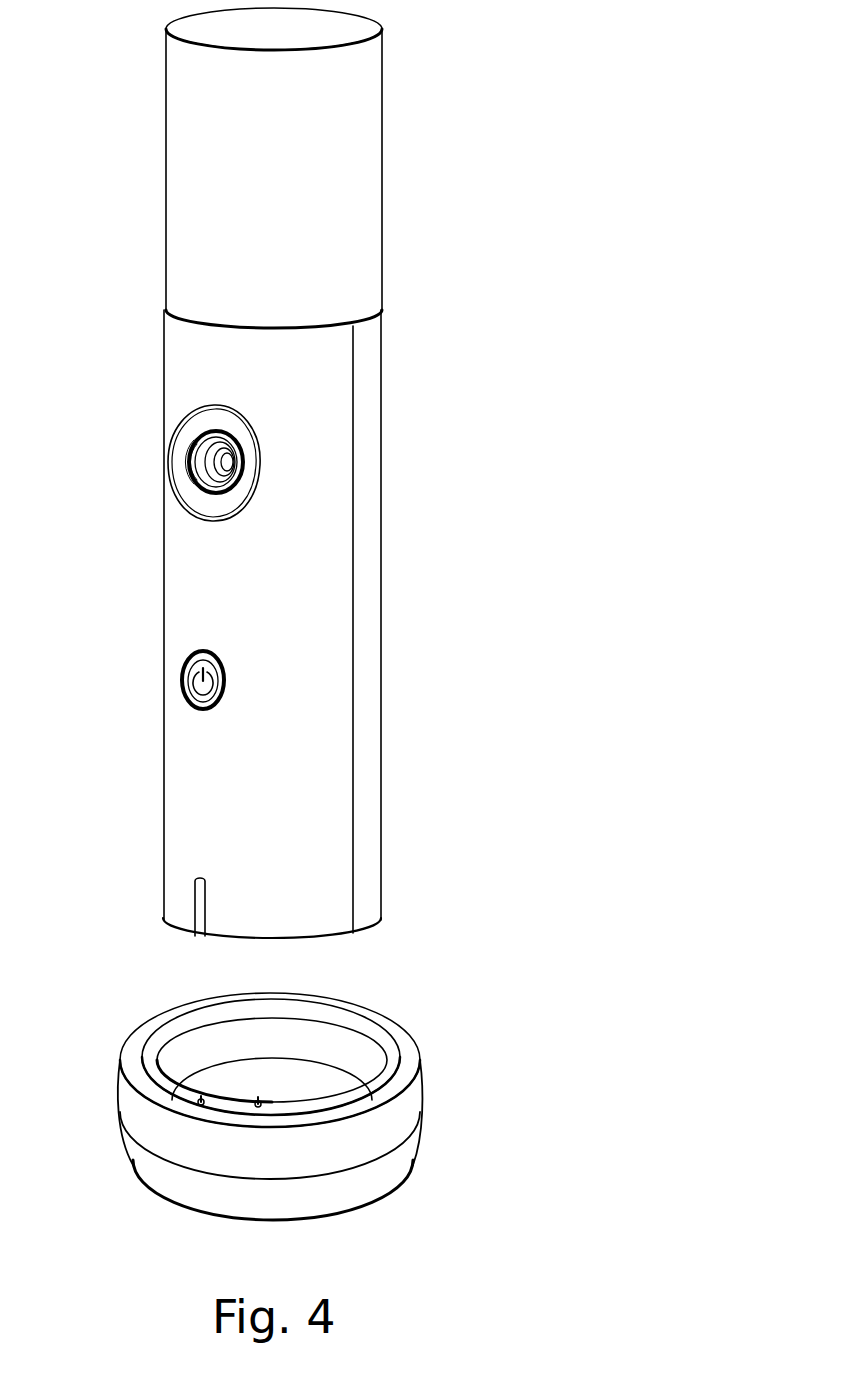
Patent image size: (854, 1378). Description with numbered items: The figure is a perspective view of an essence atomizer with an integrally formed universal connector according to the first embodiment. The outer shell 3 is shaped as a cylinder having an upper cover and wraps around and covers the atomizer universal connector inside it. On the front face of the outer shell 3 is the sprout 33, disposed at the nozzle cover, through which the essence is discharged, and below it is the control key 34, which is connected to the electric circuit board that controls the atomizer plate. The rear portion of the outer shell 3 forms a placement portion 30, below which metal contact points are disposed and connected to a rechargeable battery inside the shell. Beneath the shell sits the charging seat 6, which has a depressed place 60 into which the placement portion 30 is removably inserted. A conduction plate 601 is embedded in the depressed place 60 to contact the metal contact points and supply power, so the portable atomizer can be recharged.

The outer shell 3 is at (320, 630).
The placement portion 30 is at (295, 940).
The sprout 33 is at (190, 464).
The control key 34 is at (200, 686).
The charging seat 6 is at (398, 1132).
The depressed place 60 is at (210, 1080).
The conduction plate 601 is at (198, 1102).